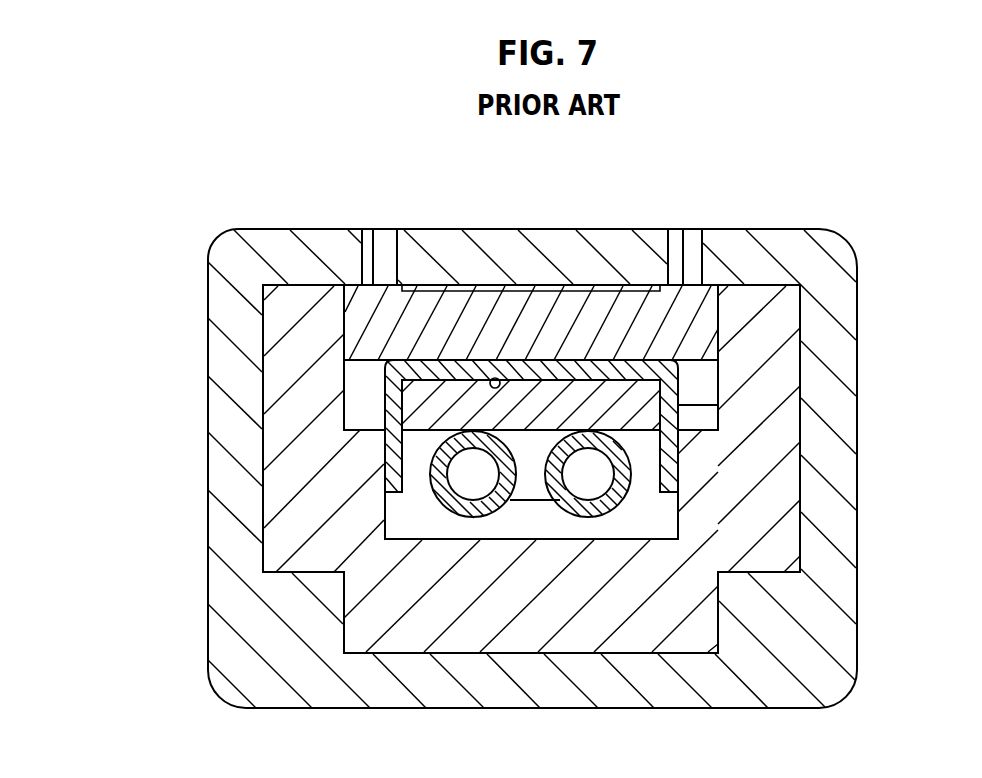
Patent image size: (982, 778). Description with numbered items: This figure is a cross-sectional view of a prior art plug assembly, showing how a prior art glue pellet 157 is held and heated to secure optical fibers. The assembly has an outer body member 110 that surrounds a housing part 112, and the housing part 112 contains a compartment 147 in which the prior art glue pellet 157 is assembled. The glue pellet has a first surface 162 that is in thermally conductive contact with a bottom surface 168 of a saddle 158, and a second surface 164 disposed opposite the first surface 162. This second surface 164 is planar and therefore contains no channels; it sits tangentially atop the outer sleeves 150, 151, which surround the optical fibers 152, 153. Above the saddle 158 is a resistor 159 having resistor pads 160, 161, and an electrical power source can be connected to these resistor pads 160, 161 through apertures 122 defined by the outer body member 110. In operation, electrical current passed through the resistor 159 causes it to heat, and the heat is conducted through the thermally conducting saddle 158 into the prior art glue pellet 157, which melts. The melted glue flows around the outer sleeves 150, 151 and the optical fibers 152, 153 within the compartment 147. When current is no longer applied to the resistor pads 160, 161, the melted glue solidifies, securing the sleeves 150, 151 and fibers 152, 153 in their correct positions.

The outer body member 110 is at (208, 312).
The housing part 112 is at (263, 505).
The apertures 122 is at (393, 247).
The compartment 147 is at (393, 503).
The outer sleeve 150 is at (472, 485).
The outer sleeve 151 is at (627, 488).
The optical fiber 152 is at (468, 507).
The optical fiber 153 is at (603, 475).
The prior art glue pellet 157 is at (680, 390).
The saddle 158 is at (662, 392).
The resistor 159 is at (620, 300).
The resistor pad 160 is at (368, 277).
The resistor pad 161 is at (686, 285).
The first surface 162 is at (545, 376).
The second surface 164 is at (532, 430).
The bottom surface 168 is at (500, 377).